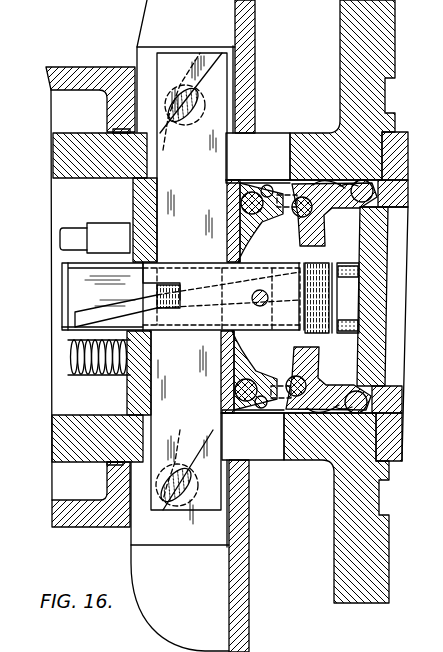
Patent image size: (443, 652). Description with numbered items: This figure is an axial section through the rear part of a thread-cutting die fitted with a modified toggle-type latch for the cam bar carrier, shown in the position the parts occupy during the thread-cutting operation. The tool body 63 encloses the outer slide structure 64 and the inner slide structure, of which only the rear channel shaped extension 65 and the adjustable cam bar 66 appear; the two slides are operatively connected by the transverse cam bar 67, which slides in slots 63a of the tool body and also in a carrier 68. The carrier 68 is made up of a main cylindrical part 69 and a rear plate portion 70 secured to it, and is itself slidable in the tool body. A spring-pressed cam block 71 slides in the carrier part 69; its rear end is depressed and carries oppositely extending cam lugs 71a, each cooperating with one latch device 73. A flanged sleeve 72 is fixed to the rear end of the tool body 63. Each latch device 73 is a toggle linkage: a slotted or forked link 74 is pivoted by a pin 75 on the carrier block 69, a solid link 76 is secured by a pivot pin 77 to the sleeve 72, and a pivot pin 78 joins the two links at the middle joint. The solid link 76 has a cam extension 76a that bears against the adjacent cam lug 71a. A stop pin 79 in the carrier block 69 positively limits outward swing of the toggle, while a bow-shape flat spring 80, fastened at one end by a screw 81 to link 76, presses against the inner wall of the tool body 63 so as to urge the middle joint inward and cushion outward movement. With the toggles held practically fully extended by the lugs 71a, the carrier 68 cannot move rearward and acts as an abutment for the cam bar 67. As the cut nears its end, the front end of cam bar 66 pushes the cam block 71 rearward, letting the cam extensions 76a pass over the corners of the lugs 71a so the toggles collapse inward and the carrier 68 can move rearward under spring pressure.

The tool body 63 is at (388, 28).
The slots 63a is at (265, 140).
The outer slide structure 64 is at (122, 532).
The rear channel shaped extension 65 is at (72, 328).
The adjustable cam bar 66 is at (82, 293).
The transverse cam bar 67 is at (171, 62).
The carrier 68 is at (123, 196).
The main cylindrical part 69 is at (133, 388).
The rear plate portion 70 is at (389, 240).
The cam block 71 is at (192, 277).
The cam lugs 71a is at (325, 343).
The flanged sleeve 72 is at (402, 153).
The latch device 73 is at (291, 188).
The slotted link 74 is at (259, 218).
The pin 75 is at (240, 203).
The solid link 76 is at (352, 214).
The cam extension 76a is at (304, 362).
The pivot pin 77 is at (380, 193).
The pivot pin 78 is at (300, 217).
The stop pin 79 is at (262, 188).
The bow-shape flat spring 80 is at (319, 187).
The screw 81 is at (355, 180).